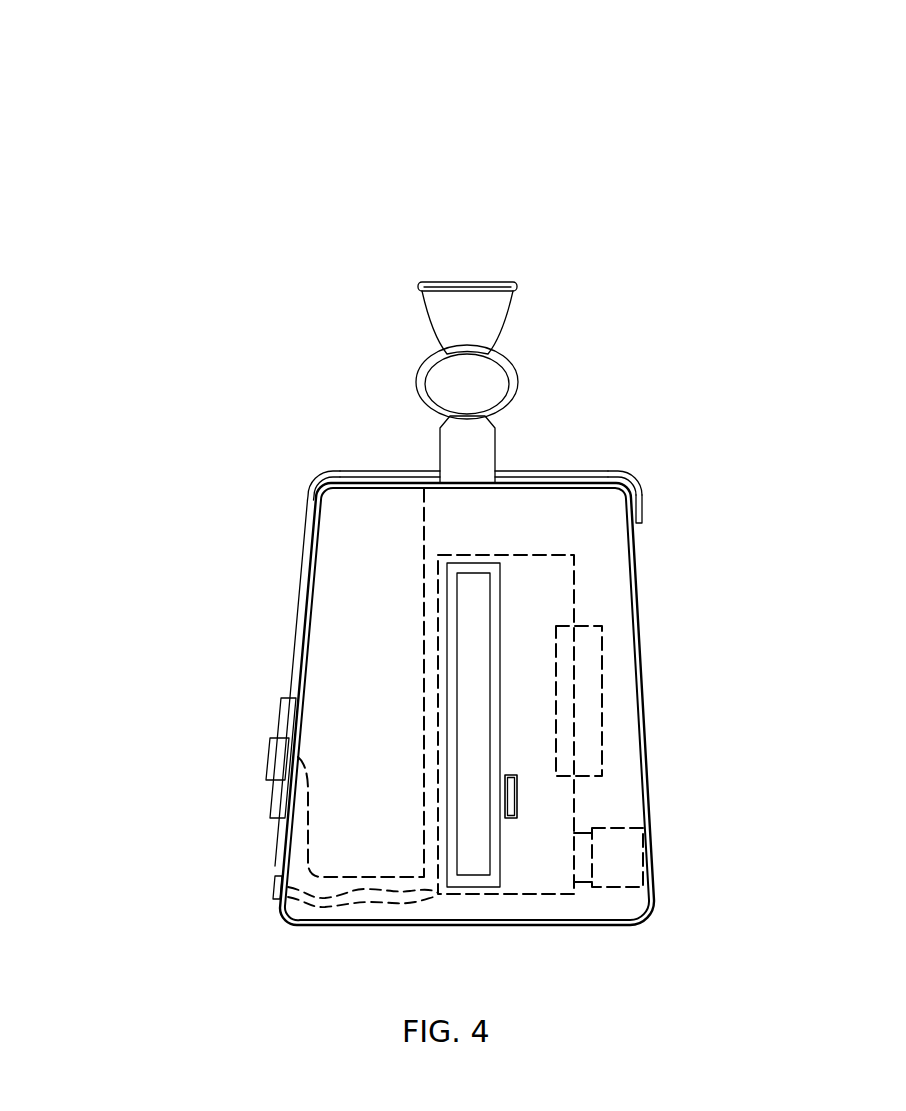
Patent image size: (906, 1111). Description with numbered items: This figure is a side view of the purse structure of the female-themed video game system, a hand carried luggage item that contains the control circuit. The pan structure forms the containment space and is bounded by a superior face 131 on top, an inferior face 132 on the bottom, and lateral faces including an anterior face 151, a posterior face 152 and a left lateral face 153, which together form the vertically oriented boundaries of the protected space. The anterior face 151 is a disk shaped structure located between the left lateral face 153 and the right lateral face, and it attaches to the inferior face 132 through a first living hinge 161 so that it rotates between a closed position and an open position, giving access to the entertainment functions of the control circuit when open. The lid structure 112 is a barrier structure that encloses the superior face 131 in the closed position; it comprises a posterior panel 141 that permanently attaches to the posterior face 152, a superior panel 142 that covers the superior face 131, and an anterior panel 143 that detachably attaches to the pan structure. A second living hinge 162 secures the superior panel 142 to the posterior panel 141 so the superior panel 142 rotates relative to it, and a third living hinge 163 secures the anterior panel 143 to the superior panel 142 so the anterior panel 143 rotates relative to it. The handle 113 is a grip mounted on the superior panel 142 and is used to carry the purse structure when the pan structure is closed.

The lid structure 112 is at (135, 0).
The handle 113 is at (475, 293).
The superior face 131 is at (365, 487).
The inferior face 132 is at (376, 923).
The posterior panel 141 is at (643, 509).
The superior panel 142 is at (542, 473).
The anterior panel 143 is at (300, 613).
The anterior face 151 is at (288, 842).
The posterior face 152 is at (642, 707).
The left lateral face 153 is at (610, 625).
The first living hinge 161 is at (285, 913).
The second living hinge 162 is at (628, 485).
The third living hinge 163 is at (327, 472).